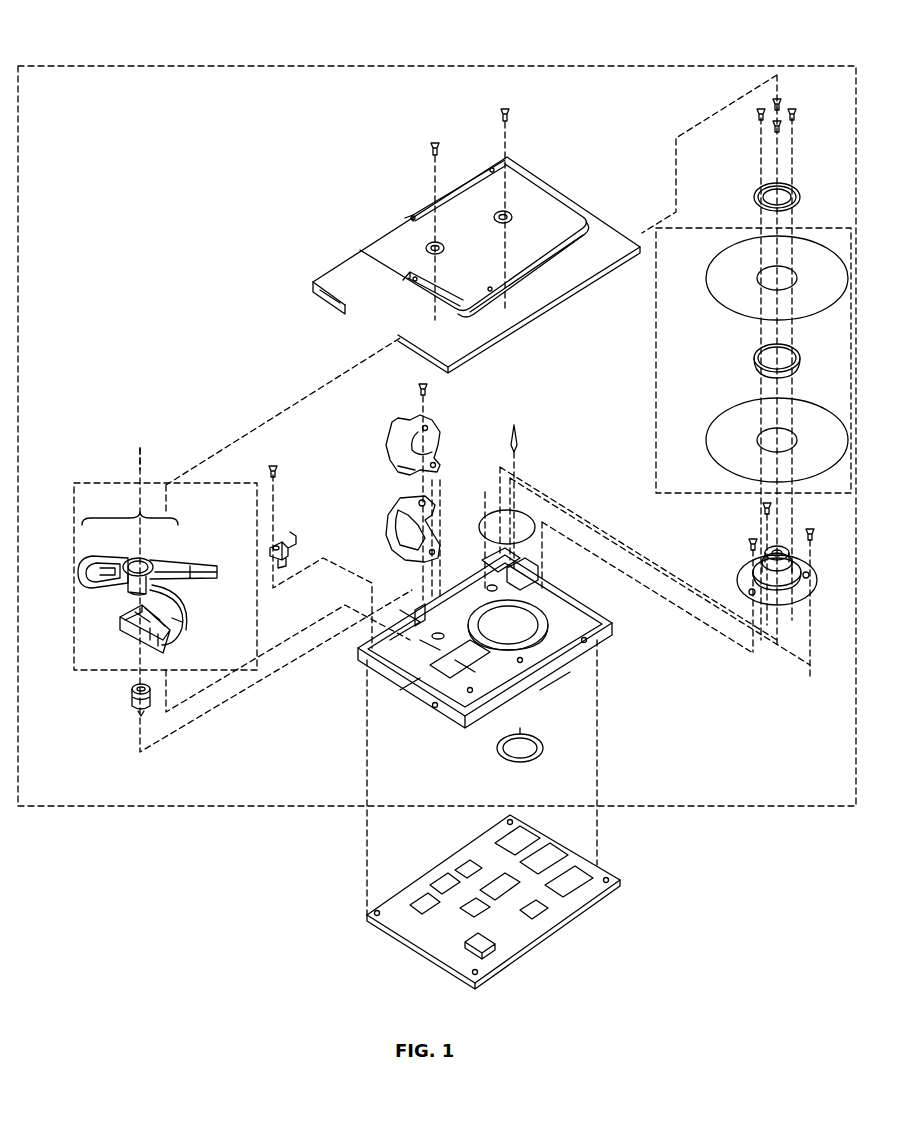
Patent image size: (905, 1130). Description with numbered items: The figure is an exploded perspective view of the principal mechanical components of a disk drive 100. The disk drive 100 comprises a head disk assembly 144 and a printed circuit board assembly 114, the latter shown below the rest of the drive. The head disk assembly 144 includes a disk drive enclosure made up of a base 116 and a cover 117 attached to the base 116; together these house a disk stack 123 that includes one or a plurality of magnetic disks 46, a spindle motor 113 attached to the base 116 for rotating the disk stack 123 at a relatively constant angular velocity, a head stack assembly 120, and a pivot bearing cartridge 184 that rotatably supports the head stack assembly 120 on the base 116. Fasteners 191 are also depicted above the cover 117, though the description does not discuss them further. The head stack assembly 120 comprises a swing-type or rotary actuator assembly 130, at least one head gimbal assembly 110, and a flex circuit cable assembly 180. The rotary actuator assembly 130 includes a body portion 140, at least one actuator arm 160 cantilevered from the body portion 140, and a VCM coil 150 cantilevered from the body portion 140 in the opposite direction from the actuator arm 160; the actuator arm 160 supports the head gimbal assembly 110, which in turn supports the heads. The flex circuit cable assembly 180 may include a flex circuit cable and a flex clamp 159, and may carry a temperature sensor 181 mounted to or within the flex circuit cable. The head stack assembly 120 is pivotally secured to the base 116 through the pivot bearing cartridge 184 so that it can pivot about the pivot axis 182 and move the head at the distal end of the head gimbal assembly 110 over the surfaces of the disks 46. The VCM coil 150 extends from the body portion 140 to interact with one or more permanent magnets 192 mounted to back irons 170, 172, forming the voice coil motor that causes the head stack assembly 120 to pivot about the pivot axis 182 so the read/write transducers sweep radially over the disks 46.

The disk drive 100 is at (174, 44).
The head gimbal assembly 110 is at (192, 564).
The spindle motor 113 is at (747, 574).
The printed circuit board assembly 114 is at (545, 937).
The base 116 is at (604, 643).
The cover 117 is at (383, 232).
The head stack assembly 120 is at (105, 483).
The disk stack 123 is at (656, 347).
The rotary actuator assembly 130 is at (132, 512).
The body portion 140 is at (148, 560).
The head disk assembly 144 is at (745, 811).
The VCM coil 150 is at (100, 586).
The flex clamp 159 is at (133, 636).
The actuator arm 160 is at (165, 578).
The back iron 170 is at (398, 443).
The back iron 172 is at (420, 503).
The flex circuit cable assembly 180 is at (182, 636).
The temperature sensor 181 is at (182, 620).
The pivot axis 182 is at (148, 455).
The pivot bearing cartridge 184 is at (128, 698).
The screws 191 is at (433, 140).
The permanent magnet 192 is at (405, 528).
The magnetic disk 46 is at (727, 312).